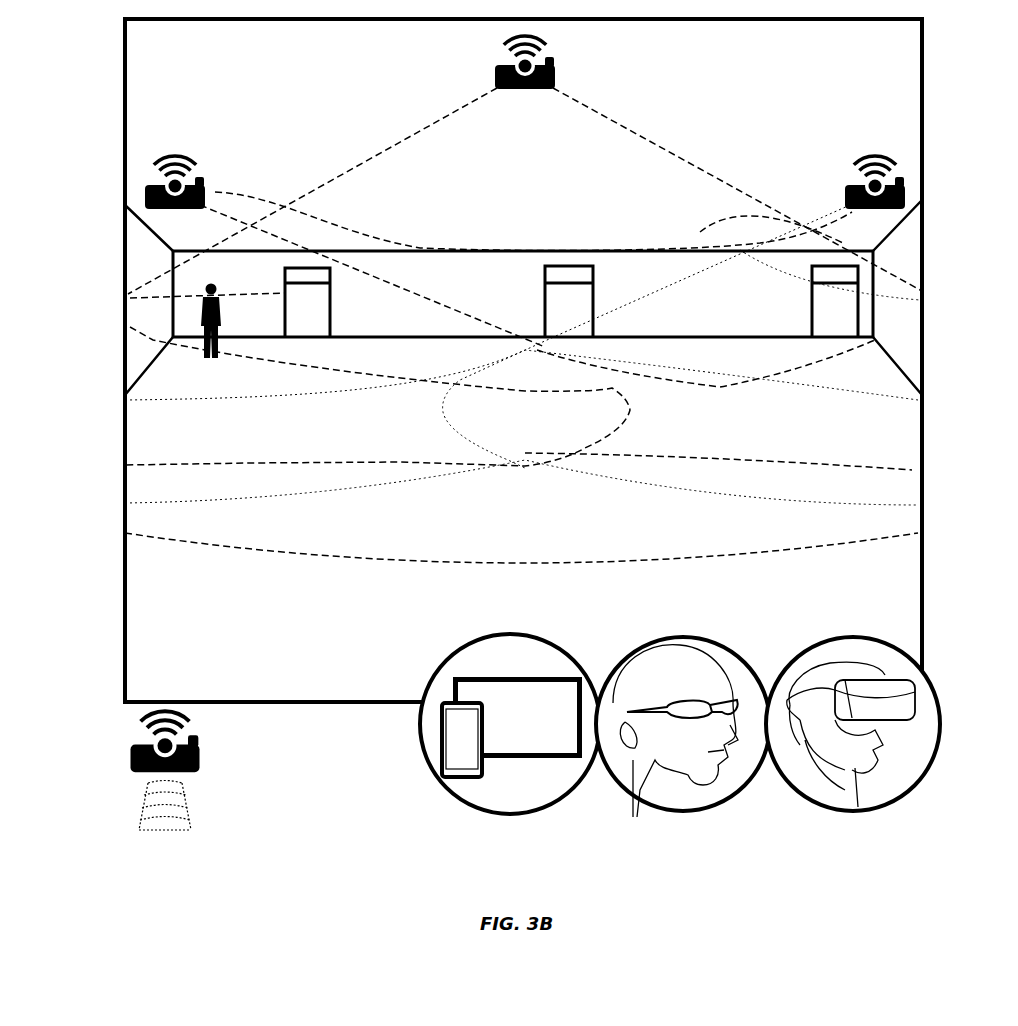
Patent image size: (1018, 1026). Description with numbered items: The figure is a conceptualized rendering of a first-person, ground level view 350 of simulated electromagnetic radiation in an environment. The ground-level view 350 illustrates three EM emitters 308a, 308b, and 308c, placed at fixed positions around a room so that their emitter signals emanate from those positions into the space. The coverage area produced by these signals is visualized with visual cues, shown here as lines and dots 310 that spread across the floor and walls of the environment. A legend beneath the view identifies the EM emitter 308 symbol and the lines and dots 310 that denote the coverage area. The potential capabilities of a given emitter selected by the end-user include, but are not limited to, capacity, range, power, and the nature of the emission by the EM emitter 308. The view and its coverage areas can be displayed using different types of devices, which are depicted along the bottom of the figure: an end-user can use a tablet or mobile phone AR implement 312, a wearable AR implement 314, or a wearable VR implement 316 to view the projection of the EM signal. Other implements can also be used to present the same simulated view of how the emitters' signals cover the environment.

The first-person, ground level view 350 is at (565, 355).
The EM emitter 308a is at (561, 62).
The EM emitter 308b is at (203, 182).
The EM emitter 308c is at (851, 182).
The EM emitter 308 is at (188, 741).
The lines and dots 310 is at (202, 806).
The tablet or mobile phone AR implement 312 is at (510, 742).
The wearable AR implement 314 is at (683, 743).
The wearable VR implement 316 is at (853, 743).